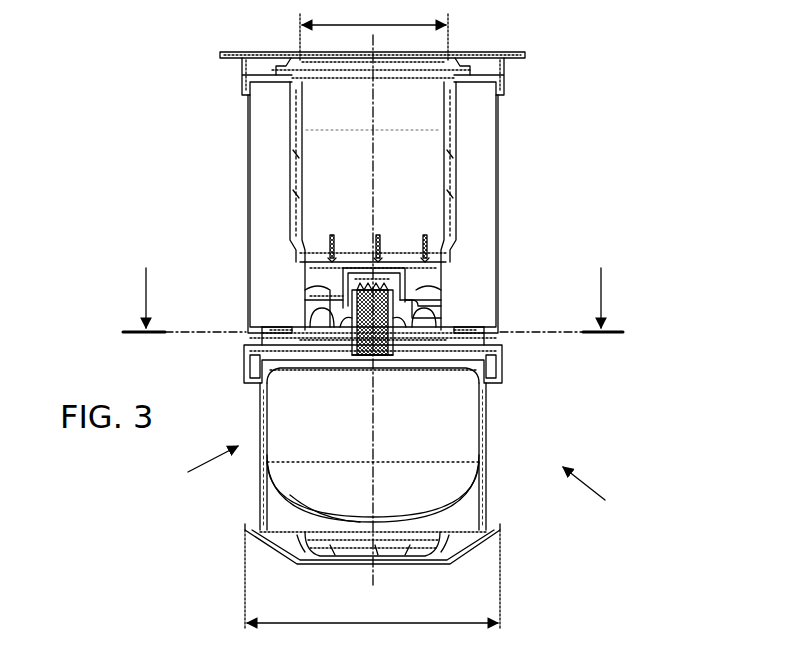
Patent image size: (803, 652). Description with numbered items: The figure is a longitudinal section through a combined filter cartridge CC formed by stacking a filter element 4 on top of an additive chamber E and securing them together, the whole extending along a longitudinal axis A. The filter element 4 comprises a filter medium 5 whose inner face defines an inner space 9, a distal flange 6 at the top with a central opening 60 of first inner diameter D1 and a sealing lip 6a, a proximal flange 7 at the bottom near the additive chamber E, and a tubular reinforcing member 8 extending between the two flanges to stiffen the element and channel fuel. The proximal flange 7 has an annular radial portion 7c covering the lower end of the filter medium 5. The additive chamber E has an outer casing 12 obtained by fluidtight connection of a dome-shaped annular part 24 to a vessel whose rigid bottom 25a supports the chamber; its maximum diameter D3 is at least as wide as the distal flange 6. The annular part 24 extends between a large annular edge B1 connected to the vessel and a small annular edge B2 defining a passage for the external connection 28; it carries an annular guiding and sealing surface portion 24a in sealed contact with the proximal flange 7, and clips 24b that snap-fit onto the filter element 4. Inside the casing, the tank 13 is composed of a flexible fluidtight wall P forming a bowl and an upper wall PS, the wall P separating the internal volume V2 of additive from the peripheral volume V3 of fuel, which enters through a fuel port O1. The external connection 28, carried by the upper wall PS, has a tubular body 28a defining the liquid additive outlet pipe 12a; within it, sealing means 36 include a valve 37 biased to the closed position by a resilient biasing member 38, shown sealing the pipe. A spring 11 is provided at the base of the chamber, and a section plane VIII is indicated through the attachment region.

The filter element 4 is at (240, 152).
The filter medium 5 is at (262, 115).
The distal flange 6 is at (503, 84).
The sealing lip 6a is at (457, 62).
The central opening 60 is at (302, 52).
The reinforcing member 8 is at (452, 192).
The inner space 9 is at (415, 155).
The proximal flange 7 is at (500, 326).
The radial portion 7c is at (490, 335).
The external connection 28 is at (346, 282).
The tubular body 28a is at (412, 318).
The sealing means 36 is at (402, 300).
The valve 37 is at (383, 290).
The resilient biasing member 38 is at (380, 356).
The liquid additive outlet pipe 12a is at (362, 356).
The fuel port O1 is at (425, 306).
The annular part 24 is at (298, 348).
The guiding and sealing surface portion 24a is at (284, 333).
The clips 24b is at (322, 300).
The large annular edge B1 is at (252, 373).
The small annular edge B2 is at (342, 292).
The upper wall PS is at (483, 388).
The outer casing 12 is at (257, 488).
The tank 13 is at (485, 493).
The internal volume V2 is at (457, 422).
The peripheral volume V3 is at (467, 505).
The flexible fluidtight wall P is at (303, 508).
The spring 11 is at (481, 550).
The rigid bottom 25a is at (302, 540).
The longitudinal axis A is at (379, 573).
The additive chamber E is at (204, 467).
The combined filter cartridge CC is at (594, 497).
The first inner diameter D1 is at (374, 31).
The maximum diameter D3 is at (372, 579).
The section line VIII is at (138, 295).